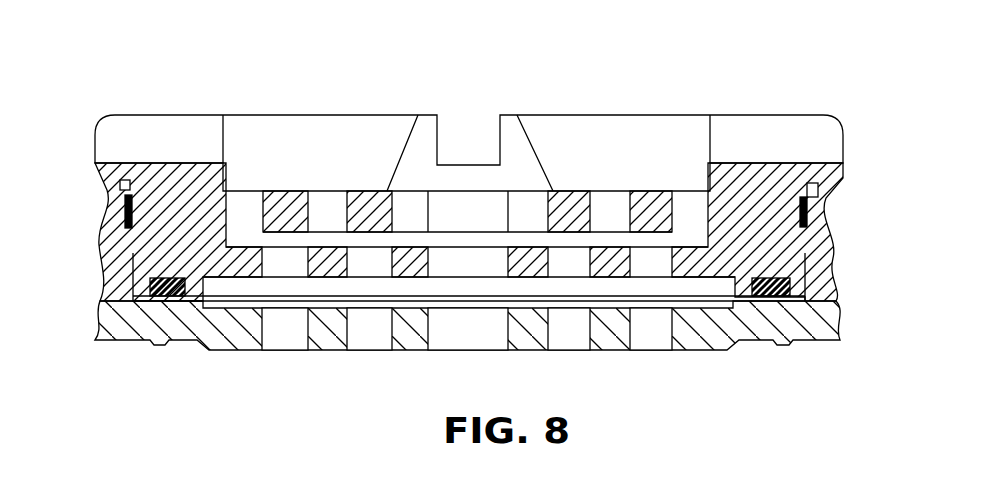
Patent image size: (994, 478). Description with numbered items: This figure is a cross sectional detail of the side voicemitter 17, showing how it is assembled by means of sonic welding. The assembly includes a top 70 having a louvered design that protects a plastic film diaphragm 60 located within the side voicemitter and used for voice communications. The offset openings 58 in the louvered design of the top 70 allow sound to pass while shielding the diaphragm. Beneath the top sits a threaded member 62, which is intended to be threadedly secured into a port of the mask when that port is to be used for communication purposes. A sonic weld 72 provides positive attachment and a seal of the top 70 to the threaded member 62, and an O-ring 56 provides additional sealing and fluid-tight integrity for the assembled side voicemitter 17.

The side voicemitter 17 is at (473, 211).
The top 70 is at (792, 113).
The sonic weld 72 is at (130, 216).
The O-ring 56 is at (160, 266).
The offset openings 58 is at (558, 258).
The plastic film diaphragm 60 is at (577, 303).
The threaded member 62 is at (848, 283).